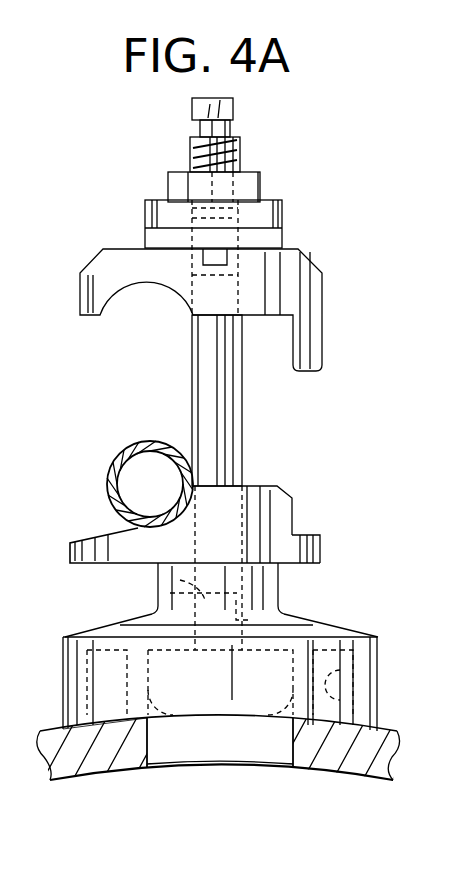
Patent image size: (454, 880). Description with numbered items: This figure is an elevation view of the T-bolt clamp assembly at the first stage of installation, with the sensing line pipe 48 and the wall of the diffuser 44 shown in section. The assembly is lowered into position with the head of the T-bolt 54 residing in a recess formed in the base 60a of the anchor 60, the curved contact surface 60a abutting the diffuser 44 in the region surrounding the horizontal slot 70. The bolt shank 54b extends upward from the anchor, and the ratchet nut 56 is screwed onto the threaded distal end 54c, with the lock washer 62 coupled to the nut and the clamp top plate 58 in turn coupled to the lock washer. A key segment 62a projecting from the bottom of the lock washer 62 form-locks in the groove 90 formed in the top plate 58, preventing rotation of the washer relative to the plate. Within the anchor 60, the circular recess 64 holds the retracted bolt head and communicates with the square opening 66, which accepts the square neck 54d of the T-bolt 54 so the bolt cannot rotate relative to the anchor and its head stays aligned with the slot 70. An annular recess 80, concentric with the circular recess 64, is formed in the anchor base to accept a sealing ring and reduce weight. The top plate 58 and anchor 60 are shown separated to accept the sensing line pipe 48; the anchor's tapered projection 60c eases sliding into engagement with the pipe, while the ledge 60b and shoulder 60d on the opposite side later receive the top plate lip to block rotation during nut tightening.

The diffuser 44 is at (323, 773).
The sensing line pipe 48 is at (110, 474).
The T-bolt 54 is at (190, 392).
The bolt shank 54b is at (243, 446).
The distal end of T-bolt 54c is at (236, 155).
The square neck 54d is at (157, 612).
The ratchet nut 56 is at (163, 168).
The clamp top plate 58 is at (325, 287).
The anchor 60 is at (282, 585).
The curved contact surface of anchor base 60a is at (113, 728).
The ledge 60b is at (302, 532).
The tapered projection 60c is at (110, 532).
The shoulder 60d is at (291, 498).
The lock washer 62 is at (286, 209).
The key segment 62a is at (203, 256).
The circular recess 64 is at (288, 674).
The square opening 66 is at (160, 580).
The slot 70 is at (288, 746).
The annular recess 80 is at (344, 683).
The groove 90 is at (216, 264).